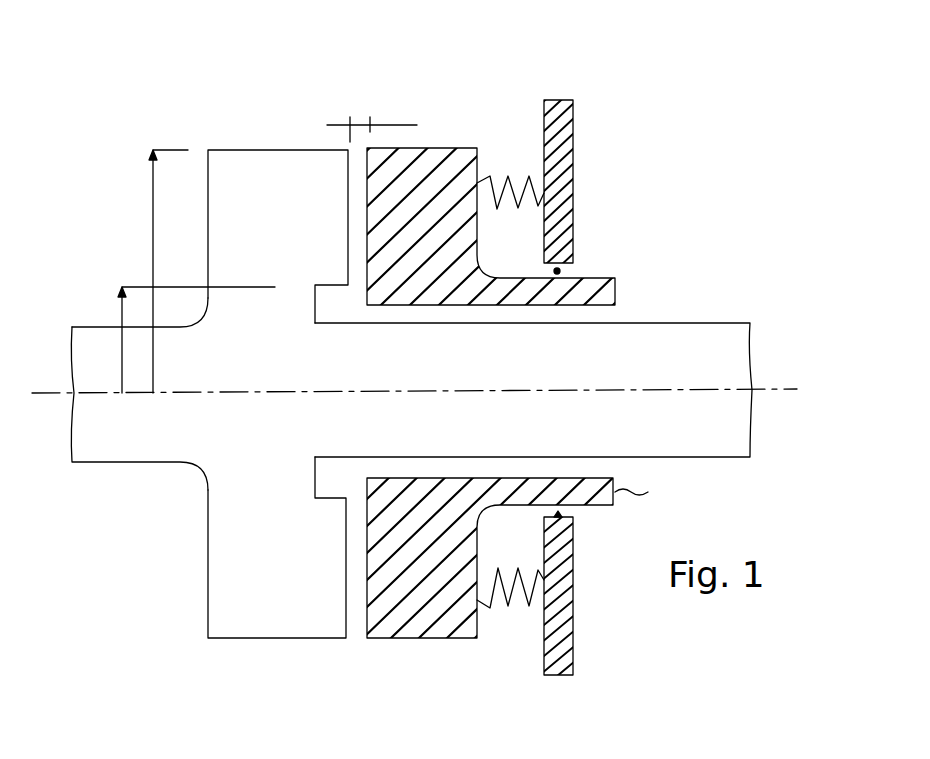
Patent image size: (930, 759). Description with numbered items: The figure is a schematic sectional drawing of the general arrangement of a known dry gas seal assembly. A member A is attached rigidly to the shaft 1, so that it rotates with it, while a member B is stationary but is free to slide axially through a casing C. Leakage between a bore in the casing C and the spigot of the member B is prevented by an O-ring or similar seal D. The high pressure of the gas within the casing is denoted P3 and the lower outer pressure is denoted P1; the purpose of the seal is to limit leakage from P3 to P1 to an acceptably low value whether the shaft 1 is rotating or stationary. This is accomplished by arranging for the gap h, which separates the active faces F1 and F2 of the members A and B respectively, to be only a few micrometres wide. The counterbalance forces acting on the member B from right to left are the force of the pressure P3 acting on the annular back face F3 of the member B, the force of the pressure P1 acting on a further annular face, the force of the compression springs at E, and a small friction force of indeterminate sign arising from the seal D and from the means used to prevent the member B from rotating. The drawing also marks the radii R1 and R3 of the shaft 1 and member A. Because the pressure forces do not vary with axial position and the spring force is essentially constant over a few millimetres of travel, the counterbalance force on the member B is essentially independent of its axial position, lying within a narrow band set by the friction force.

The shaft 1 is at (722, 425).
The member A is at (228, 167).
The member B is at (461, 162).
The casing C is at (566, 100).
The O-ring seal D is at (557, 271).
The compression springs E is at (495, 178).
The gap h is at (372, 120).
The shaft radius R1 is at (178, 340).
The hub outer radius R3 is at (151, 271).
The outer pressure P1 is at (764, 135).
The high pressure P3 is at (274, 67).
The active face of member A F1 is at (348, 615).
The active face of member B F2 is at (362, 640).
The annular back face of member B F3 is at (477, 628).